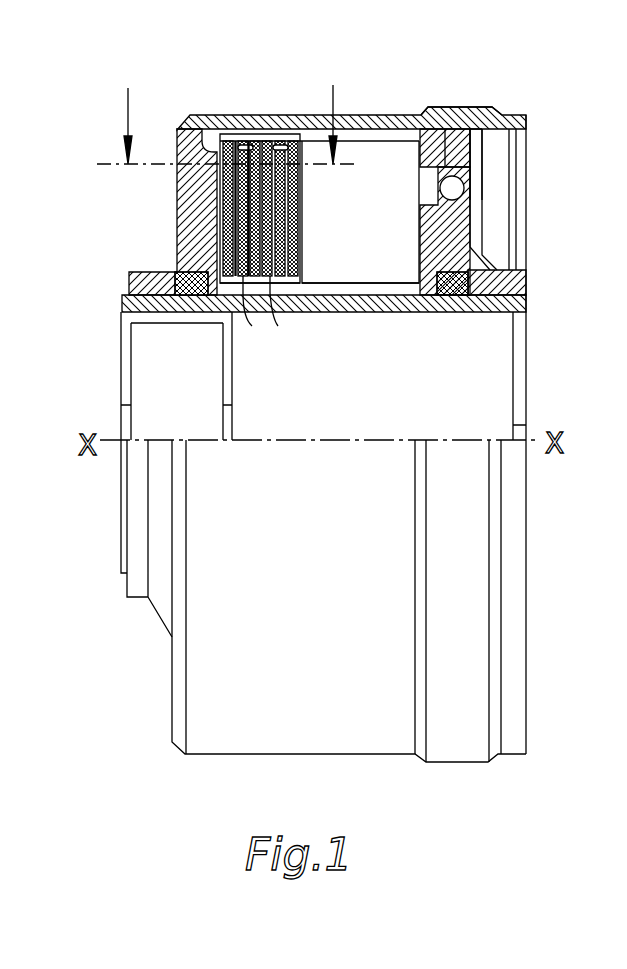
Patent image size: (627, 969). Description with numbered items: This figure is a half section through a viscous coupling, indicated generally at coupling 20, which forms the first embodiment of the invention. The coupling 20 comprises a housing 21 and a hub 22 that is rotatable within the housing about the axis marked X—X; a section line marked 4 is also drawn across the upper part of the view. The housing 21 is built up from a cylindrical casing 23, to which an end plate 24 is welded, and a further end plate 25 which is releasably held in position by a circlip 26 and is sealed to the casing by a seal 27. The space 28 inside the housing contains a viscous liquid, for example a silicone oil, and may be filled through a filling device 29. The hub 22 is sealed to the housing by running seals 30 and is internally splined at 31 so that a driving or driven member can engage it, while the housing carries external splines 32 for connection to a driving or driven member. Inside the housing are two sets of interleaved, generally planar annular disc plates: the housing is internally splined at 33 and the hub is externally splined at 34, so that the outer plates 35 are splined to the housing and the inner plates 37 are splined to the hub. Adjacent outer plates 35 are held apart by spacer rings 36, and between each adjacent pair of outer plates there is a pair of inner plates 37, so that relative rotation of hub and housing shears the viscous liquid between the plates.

The section line 4- 4 is at (227, 134).
The coupling 20 is at (323, 728).
The housing 21 is at (393, 110).
The hub 22 is at (357, 313).
The cylindrical casing 23 is at (510, 114).
The end plate 24 is at (189, 204).
The further end plate 25 is at (462, 243).
The circlip 26 is at (484, 137).
The seal 27 is at (448, 161).
The space 28 is at (388, 227).
The filling device 29 is at (458, 188).
The running seals 30 is at (183, 273).
The internal splines 31 is at (147, 323).
The external splines 32 is at (440, 106).
The internal splines of housing 33 is at (352, 138).
The external splines of hub 34 is at (341, 288).
The outer plates 35 is at (207, 130).
The spacer rings 36 is at (283, 145).
The inner plates 37 is at (264, 318).